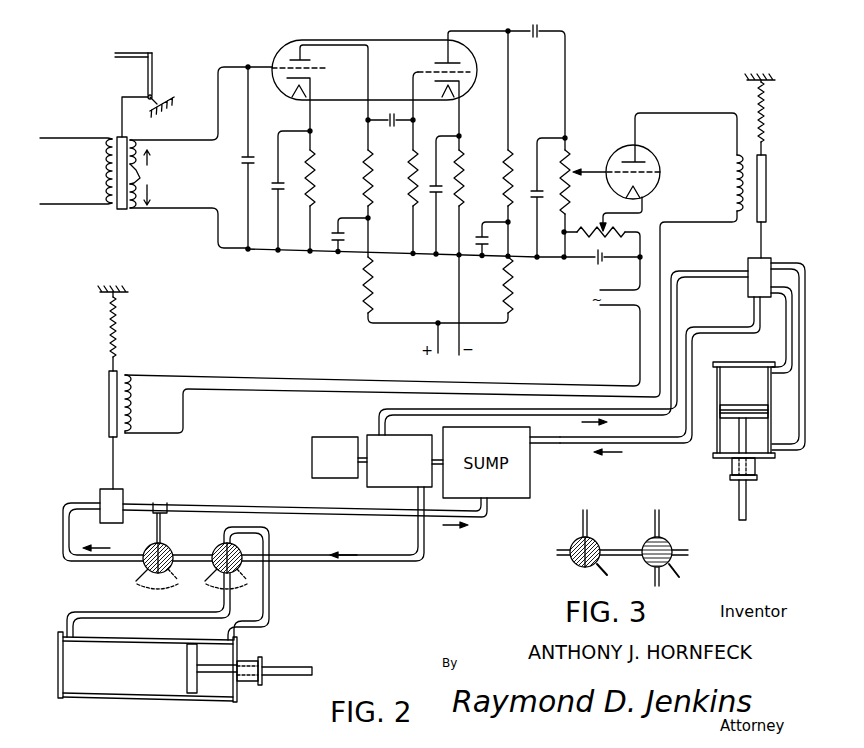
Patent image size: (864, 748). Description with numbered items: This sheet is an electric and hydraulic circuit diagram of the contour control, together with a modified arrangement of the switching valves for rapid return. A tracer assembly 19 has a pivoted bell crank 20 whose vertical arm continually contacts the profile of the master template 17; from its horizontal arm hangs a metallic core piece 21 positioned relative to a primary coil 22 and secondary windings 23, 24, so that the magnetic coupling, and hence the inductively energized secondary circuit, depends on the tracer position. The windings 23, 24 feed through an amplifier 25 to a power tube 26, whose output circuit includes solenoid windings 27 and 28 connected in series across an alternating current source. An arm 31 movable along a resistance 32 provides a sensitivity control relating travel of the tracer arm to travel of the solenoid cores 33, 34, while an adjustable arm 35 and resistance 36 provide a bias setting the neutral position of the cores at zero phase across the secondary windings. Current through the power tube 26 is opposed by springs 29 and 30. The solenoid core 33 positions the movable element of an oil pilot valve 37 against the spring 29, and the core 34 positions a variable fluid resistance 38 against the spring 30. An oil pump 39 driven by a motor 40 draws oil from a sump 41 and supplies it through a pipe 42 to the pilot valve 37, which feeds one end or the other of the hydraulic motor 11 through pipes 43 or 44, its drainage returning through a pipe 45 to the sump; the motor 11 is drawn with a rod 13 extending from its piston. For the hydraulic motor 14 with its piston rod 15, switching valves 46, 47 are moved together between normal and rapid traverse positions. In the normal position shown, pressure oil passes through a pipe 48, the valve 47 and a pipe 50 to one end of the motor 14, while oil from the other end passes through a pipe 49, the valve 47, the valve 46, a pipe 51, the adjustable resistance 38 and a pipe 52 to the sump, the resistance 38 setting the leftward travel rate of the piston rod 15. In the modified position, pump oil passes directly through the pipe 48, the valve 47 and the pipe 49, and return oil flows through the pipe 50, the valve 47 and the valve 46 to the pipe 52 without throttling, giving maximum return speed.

In FIG. 2, the hydraulic motor 11 is at (733, 394).
In FIG. 2, the piston rod 13 is at (739, 497).
In FIG. 2, the hydraulic motor 14 is at (115, 674).
In FIG. 2, the piston rod 15 is at (281, 680).
In FIG. 2, the master template 17 is at (125, 53).
In FIG. 2, the tracer assembly 19 is at (85, 114).
In FIG. 2, the pivoted bell crank 20 is at (156, 77).
In FIG. 2, the metallic core piece 21 is at (125, 209).
In FIG. 2, the primary coil 22 is at (102, 180).
In FIG. 2, the secondary winding 23 is at (140, 140).
In FIG. 2, the secondary winding 24 is at (140, 185).
In FIG. 2, the amplifier 25 is at (383, 35).
In FIG. 2, the power tube 26 is at (661, 165).
In FIG. 2, the solenoid winding 27 is at (727, 183).
In FIG. 2, the solenoid winding 28 is at (136, 418).
In FIG. 2, the spring 29 is at (768, 124).
In FIG. 2, the spring 30 is at (110, 335).
In FIG. 2, the arm 31 is at (587, 170).
In FIG. 2, the resistance 32 is at (570, 164).
In FIG. 2, the solenoid core 33 is at (767, 200).
In FIG. 2, the solenoid core 34 is at (108, 406).
In FIG. 2, the adjustable arm 35 is at (609, 213).
In FIG. 2, the resistance 36 is at (588, 238).
In FIG. 2, the oil pilot valve 37 is at (742, 267).
In FIG. 2, the variable fluid resistance 38 is at (132, 498).
In FIG. 2, the oil pump 39 is at (376, 430).
In FIG. 2, the motor 40 is at (327, 437).
In FIG. 2, the sump 41 is at (534, 437).
In FIG. 2, the pipe 42 is at (640, 418).
In FIG. 2, the pipe 43 is at (786, 342).
In FIG. 2, the pipe 44 is at (803, 455).
In FIG. 2, the pipe 45 is at (568, 448).
In FIG. 2, the switching valve 46 is at (142, 563).
In FIG. 3, the switching valve 46 is at (581, 537).
In FIG. 2, the switching valve 47 is at (221, 546).
In FIG. 3, the switching valve 47 is at (653, 537).
In FIG. 2, the pipe 48 is at (342, 567).
In FIG. 2, the pipe 49 is at (212, 614).
In FIG. 2, the pipe 50 is at (270, 610).
In FIG. 2, the pipe 51 is at (80, 562).
In FIG. 2, the pipe 52 is at (201, 508).